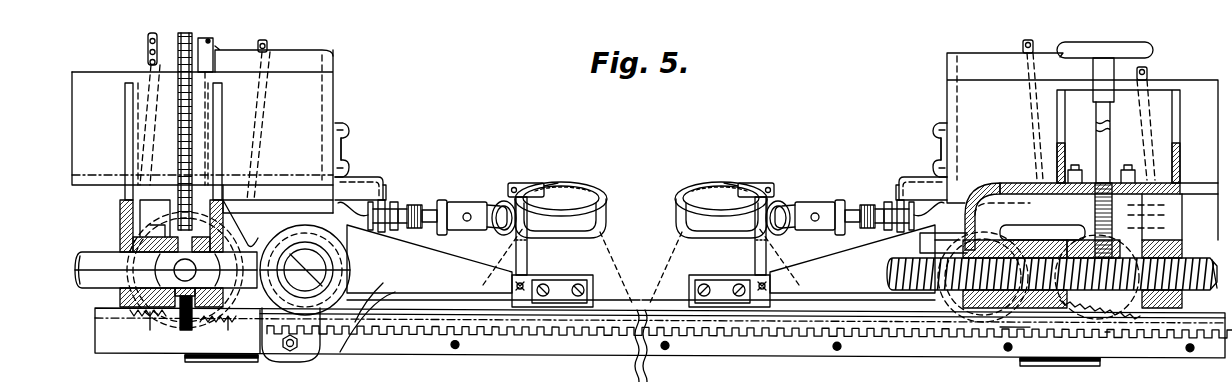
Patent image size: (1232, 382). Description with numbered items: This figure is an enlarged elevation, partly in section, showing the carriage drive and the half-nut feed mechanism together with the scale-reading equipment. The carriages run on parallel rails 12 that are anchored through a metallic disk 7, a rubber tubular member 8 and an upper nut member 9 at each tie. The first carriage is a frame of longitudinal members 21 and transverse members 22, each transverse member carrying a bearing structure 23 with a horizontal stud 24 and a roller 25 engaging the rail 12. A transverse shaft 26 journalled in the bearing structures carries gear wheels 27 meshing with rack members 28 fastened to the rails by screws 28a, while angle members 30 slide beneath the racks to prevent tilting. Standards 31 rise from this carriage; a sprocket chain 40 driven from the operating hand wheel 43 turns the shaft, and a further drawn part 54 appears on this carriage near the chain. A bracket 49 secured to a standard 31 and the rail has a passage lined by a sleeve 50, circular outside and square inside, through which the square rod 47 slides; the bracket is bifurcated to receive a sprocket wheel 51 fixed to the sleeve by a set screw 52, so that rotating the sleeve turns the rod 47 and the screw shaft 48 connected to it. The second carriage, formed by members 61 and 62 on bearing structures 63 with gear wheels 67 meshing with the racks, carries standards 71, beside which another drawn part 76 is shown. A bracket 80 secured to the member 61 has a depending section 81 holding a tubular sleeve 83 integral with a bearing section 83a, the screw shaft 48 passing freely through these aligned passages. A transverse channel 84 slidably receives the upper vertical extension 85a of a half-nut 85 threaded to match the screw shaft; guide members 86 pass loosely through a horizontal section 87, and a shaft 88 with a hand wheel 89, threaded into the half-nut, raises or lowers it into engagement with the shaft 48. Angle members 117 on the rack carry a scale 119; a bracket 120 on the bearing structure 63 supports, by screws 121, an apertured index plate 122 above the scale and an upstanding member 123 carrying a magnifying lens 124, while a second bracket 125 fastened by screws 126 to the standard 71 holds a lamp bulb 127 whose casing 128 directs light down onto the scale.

The metallic disk 7 is at (170, 65).
The tubular member 8 is at (318, 145).
The upper nut member 9 is at (1118, 50).
The rails 12 is at (405, 300).
The longitudinally extending members 21 is at (310, 92).
The transverse members 22 is at (281, 175).
The bearing structure 23 is at (252, 248).
The horizontal stud 24 is at (340, 270).
The roller 25 is at (345, 256).
The transverse shaft 26 is at (185, 281).
The gear wheels 27 is at (215, 324).
The rack members 28 is at (600, 322).
The screws 28a is at (456, 348).
The angle members 30 is at (224, 362).
The vertical members or standards 31 is at (325, 52).
The endless sprocket chain 40 is at (270, 45).
The operating hand wheel 43 is at (210, 42).
The rod 47 is at (92, 268).
The screw shaft 48 is at (1195, 292).
The bracket 49 is at (125, 165).
The sleeve 50 is at (120, 250).
The sprocket wheel 51 is at (150, 315).
The set screw 52 is at (150, 235).
The chain 54 is at (178, 140).
The longitudinal carriage member 61 is at (1198, 80).
The carriage member 62 is at (1183, 252).
The bearing structures 63 is at (958, 198).
The gear wheels 67 is at (1106, 338).
The vertical members or standards 71 is at (950, 62).
The post 76 is at (1021, 43).
The bracket 80 is at (1181, 230).
The depending bracket section 81 is at (958, 242).
The tubular sleeve 83 is at (965, 300).
The bearing section 83a is at (1000, 300).
The transverse channel 84 is at (1181, 212).
The half-nut 85 is at (1097, 280).
The upper vertical extension 85a is at (1060, 225).
The guide members 86 is at (1078, 240).
The horizontal section 87 is at (1165, 183).
The shaft 88 is at (1097, 138).
The hand wheel 89 is at (1155, 48).
The angle members 117 is at (558, 327).
The scale 119 is at (640, 312).
The bracket 120 is at (641, 265).
The screws 121 is at (542, 283).
The plate 122 is at (641, 294).
The upstanding member 123 is at (528, 246).
The magnifying lens 124 is at (558, 183).
The second bracket 125 is at (375, 175).
The screws 126 is at (348, 155).
The lamp bulb 127 is at (506, 204).
The casing 128 is at (500, 230).